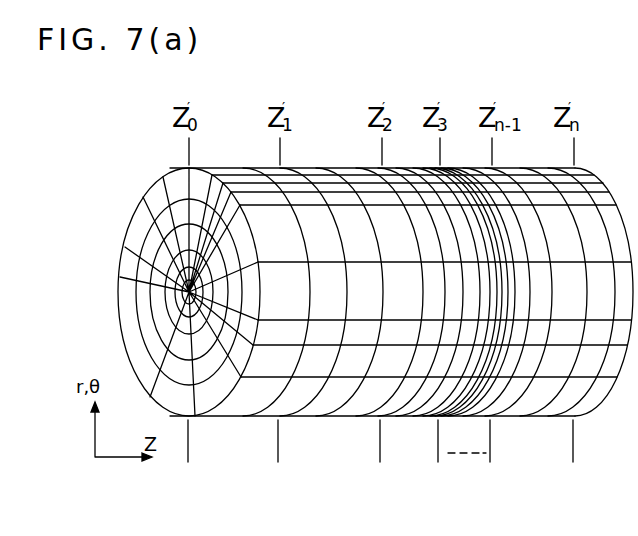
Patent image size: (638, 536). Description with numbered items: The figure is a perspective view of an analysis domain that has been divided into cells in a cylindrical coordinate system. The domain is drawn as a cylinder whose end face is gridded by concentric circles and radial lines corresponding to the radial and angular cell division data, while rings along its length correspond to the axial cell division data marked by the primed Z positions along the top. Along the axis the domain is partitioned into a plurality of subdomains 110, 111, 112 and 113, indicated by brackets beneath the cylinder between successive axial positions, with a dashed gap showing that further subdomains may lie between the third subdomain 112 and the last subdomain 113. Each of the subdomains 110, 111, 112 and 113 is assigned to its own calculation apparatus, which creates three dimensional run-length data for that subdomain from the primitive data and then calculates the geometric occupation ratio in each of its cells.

The subdomain 110 is at (275, 447).
The subdomain 111 is at (376, 447).
The subdomain 112 is at (434, 447).
The subdomain 113 is at (570, 447).